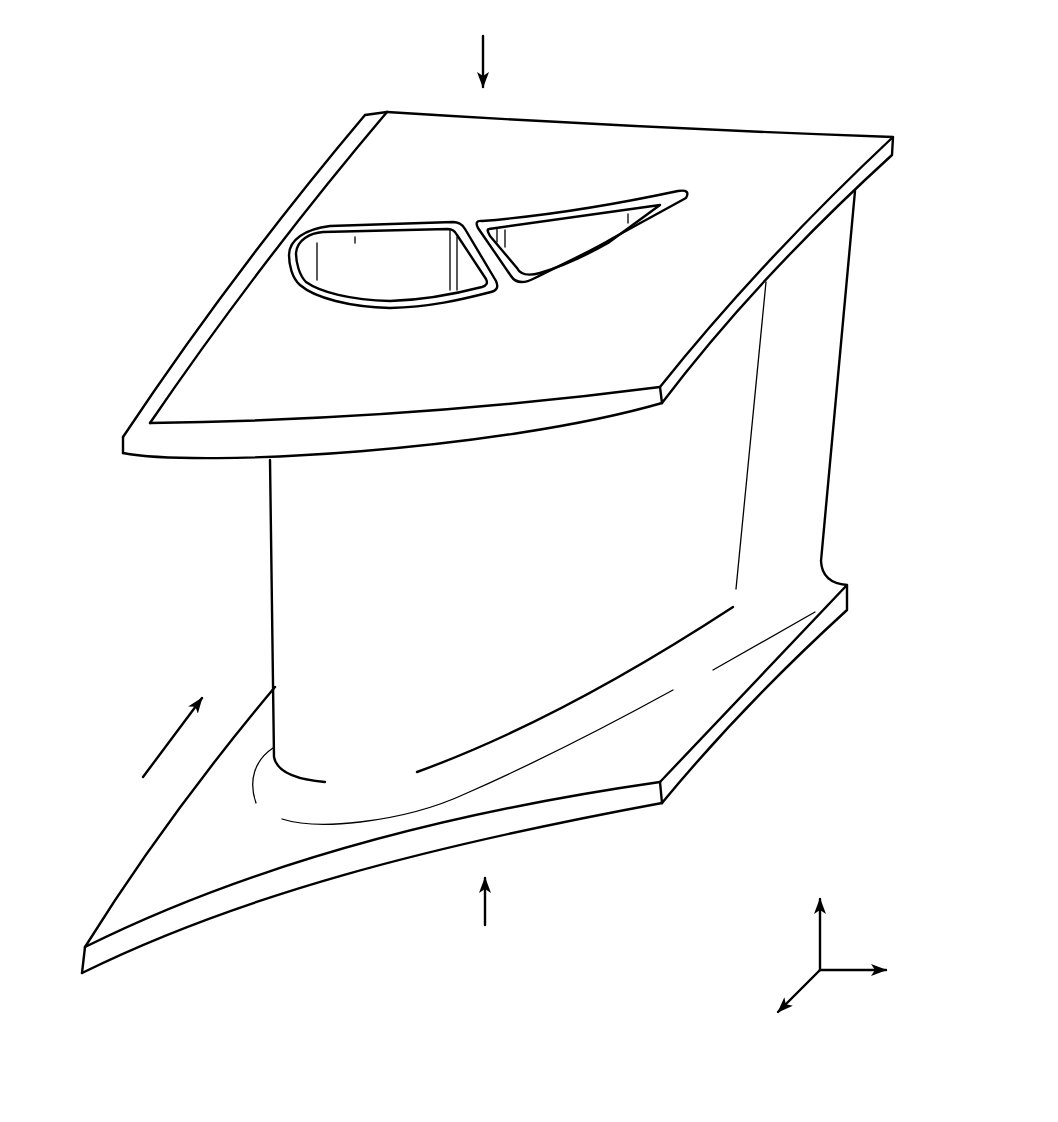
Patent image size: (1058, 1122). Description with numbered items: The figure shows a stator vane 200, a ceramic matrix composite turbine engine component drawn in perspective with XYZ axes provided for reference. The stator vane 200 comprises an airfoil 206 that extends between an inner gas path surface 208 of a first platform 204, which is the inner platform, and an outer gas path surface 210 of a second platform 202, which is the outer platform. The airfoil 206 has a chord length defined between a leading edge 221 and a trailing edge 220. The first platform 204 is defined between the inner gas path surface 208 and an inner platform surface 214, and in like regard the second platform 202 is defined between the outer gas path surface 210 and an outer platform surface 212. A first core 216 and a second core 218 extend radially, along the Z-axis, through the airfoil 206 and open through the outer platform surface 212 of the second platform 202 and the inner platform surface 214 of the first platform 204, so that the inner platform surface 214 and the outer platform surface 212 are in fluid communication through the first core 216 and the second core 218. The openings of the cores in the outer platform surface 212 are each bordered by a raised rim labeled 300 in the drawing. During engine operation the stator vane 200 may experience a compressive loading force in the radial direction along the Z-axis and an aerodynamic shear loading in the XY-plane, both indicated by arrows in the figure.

The stator vane 200 is at (758, 99).
The second platform 202 is at (252, 218).
The first platform 204 is at (753, 723).
The airfoil 206 is at (532, 590).
The inner gas path surface 208 is at (160, 845).
The outer gas path surface 210 is at (186, 463).
The outer platform surface 212 is at (168, 402).
The inner platform surface 214 is at (122, 947).
The first core 216 is at (370, 287).
The second core 218 is at (522, 258).
The trailing edge 220 is at (818, 423).
The leading edge 221 is at (272, 601).
The opening rail / flange 300 is at (400, 223).